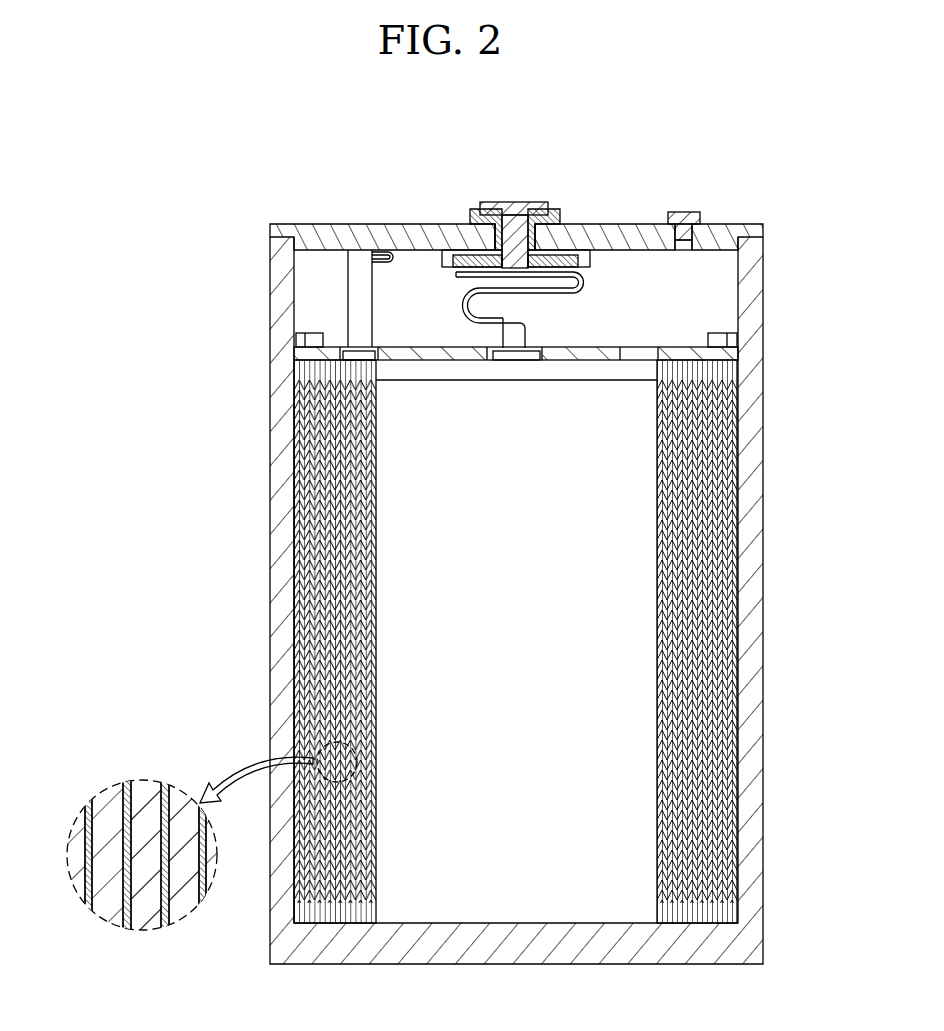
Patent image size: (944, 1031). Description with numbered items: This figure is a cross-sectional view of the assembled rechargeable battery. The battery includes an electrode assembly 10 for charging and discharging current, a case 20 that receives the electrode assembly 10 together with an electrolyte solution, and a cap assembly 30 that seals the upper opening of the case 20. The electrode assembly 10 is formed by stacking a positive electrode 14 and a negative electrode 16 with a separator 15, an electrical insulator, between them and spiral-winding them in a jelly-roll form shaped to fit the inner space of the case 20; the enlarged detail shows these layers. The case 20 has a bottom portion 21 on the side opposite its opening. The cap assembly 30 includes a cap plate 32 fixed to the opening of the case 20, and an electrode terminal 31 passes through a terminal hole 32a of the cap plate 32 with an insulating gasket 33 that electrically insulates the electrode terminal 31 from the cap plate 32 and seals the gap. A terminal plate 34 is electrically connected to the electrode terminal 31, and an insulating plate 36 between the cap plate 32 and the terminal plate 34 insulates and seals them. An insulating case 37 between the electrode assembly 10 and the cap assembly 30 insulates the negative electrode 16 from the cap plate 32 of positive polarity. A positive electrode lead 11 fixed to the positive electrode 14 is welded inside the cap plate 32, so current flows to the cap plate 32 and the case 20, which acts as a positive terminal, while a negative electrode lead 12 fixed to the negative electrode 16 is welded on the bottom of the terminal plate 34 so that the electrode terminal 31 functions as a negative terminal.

The electrode assembly 10 is at (460, 586).
The positive electrode lead 11 is at (357, 298).
The negative electrode lead 12 is at (579, 293).
The positive electrode 14 is at (143, 912).
The separator 15 is at (165, 782).
The negative electrode 16 is at (184, 898).
The case 20 is at (545, 628).
The bottom portion 21 is at (520, 963).
The cap assembly 30 is at (553, 247).
The electrode terminal 31 is at (505, 207).
The cap plate 32 is at (516, 192).
The terminal hole 32a is at (519, 222).
The insulating gasket 33 is at (470, 214).
The terminal plate 34 is at (580, 261).
The insulating plate 36 is at (581, 251).
The insulating case 37 is at (728, 354).